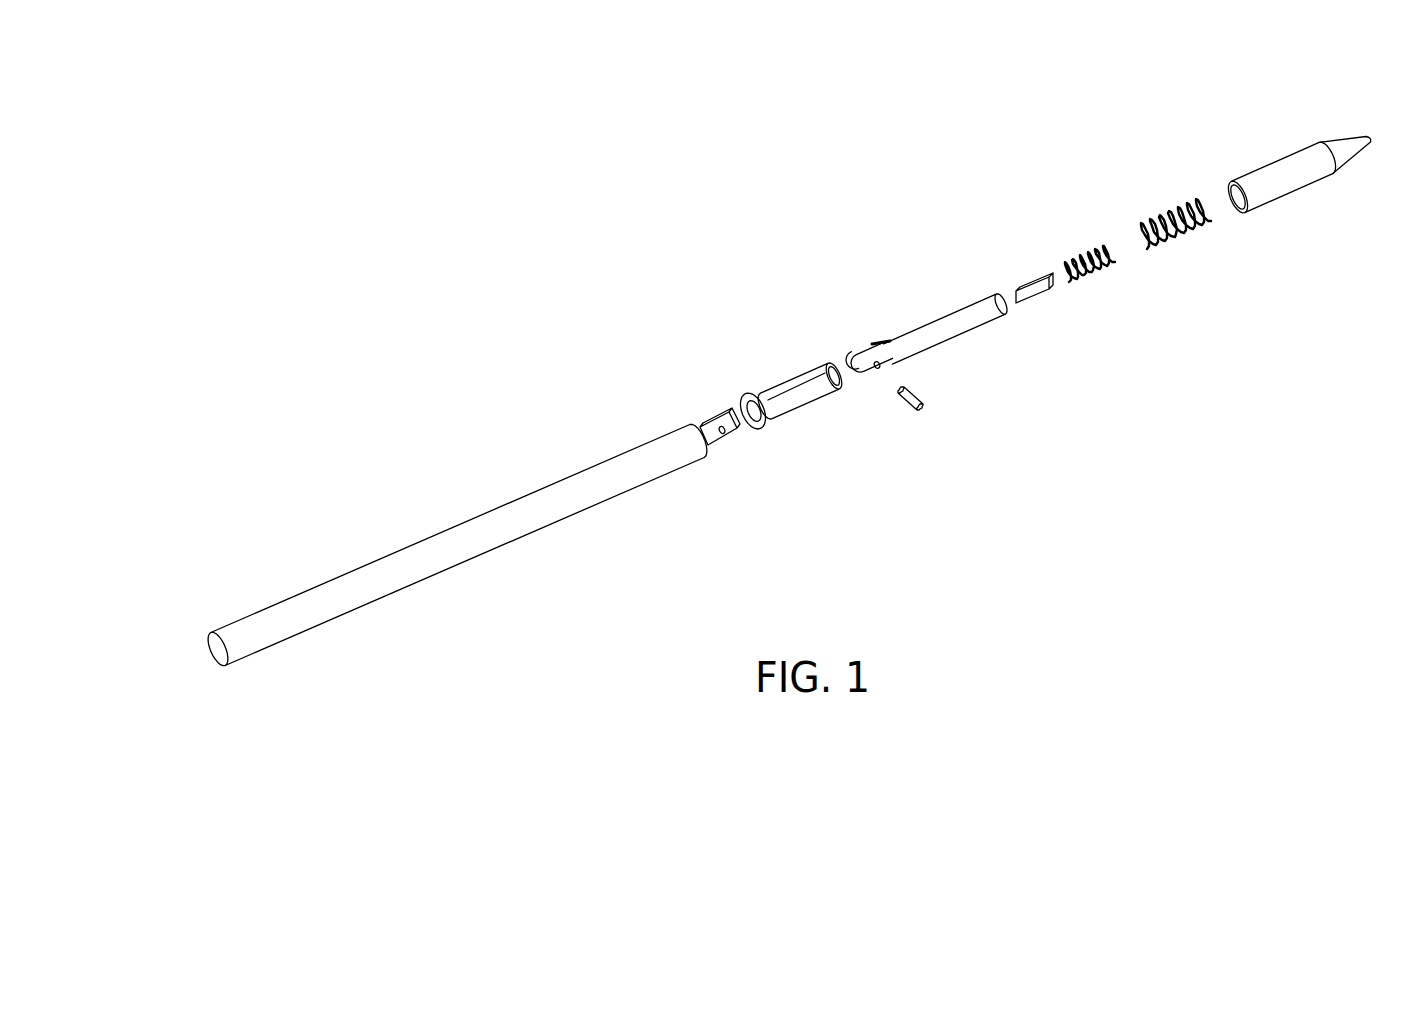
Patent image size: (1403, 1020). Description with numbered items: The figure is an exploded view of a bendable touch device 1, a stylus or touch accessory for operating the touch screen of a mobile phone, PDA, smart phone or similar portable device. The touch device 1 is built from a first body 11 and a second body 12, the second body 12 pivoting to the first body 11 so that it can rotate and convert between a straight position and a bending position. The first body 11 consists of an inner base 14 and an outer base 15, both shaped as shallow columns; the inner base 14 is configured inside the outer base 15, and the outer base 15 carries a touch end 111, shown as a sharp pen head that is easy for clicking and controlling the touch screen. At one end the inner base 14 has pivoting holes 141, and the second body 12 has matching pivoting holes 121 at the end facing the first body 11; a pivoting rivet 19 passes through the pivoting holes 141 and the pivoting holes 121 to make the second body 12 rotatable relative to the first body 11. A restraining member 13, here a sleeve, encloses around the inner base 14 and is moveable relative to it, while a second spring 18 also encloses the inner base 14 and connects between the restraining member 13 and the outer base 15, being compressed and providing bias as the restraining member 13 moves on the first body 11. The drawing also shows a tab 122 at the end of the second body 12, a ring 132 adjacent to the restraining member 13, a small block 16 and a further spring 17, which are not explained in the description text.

The touch device 1 is at (718, 176).
The first body 11 is at (1227, 88).
The touch end 111 is at (1352, 143).
The second body 12 is at (480, 525).
The pivoting holes 121 is at (727, 432).
The connecting tab 122 is at (703, 420).
The restraining member 13 is at (808, 375).
The ring washer 132 is at (752, 393).
The inner base 14 is at (938, 327).
The pivoting holes 141 is at (883, 370).
The outer base 15 is at (1268, 178).
The block 16 is at (1035, 292).
The first spring 17 is at (1087, 273).
The second spring 18 is at (1180, 238).
The pivoting rivet 19 is at (920, 403).